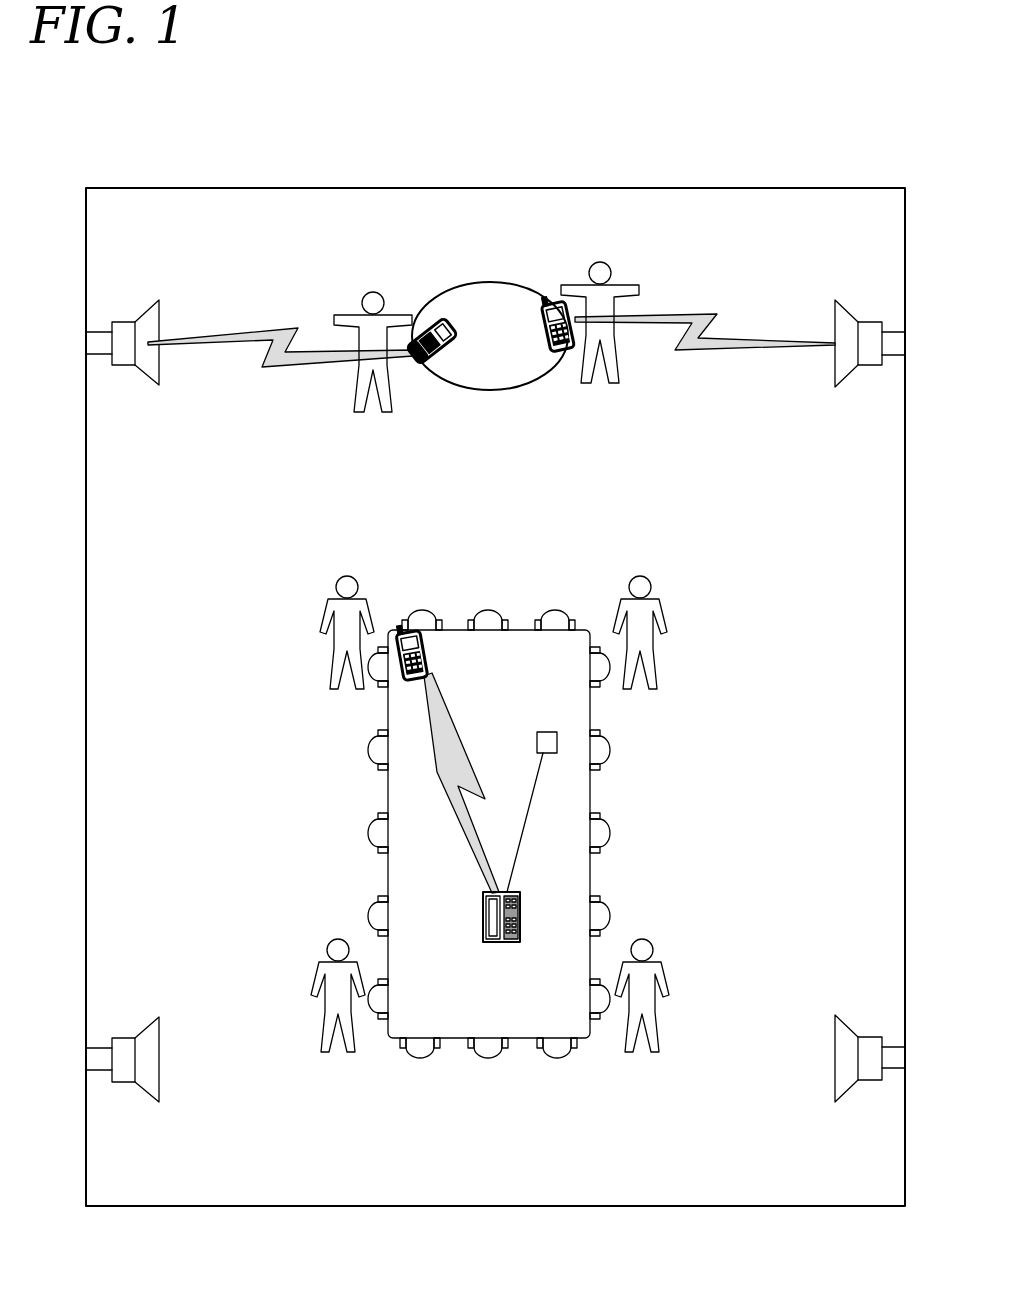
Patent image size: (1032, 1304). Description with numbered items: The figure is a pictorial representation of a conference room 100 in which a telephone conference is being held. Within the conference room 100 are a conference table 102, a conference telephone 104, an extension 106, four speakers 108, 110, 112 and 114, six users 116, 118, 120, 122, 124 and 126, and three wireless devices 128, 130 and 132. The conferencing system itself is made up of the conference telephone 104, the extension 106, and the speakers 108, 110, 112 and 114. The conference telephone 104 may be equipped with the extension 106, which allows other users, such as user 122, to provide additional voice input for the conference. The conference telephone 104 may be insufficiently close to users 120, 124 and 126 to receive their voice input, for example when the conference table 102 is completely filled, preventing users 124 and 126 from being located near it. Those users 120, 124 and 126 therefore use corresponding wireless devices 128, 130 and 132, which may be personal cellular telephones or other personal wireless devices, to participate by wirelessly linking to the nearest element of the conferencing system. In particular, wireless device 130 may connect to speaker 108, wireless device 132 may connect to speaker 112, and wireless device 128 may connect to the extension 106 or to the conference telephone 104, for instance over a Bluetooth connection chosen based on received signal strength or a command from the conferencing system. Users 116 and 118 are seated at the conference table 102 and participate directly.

The conference room 100 is at (146, 227).
The conference table 102 is at (470, 1015).
The conference telephone 104 is at (522, 918).
The extension 106 is at (557, 735).
The speaker 108 is at (149, 432).
The speaker 110 is at (149, 1142).
The speaker 112 is at (892, 422).
The speaker 114 is at (884, 1141).
The user 116 is at (355, 1084).
The user 118 is at (665, 1081).
The user 120 is at (369, 726).
The user 122 is at (662, 721).
The user 124 is at (394, 442).
The user 126 is at (622, 404).
The wireless device 128 is at (423, 638).
The wireless device 130 is at (438, 358).
The wireless device 132 is at (545, 347).